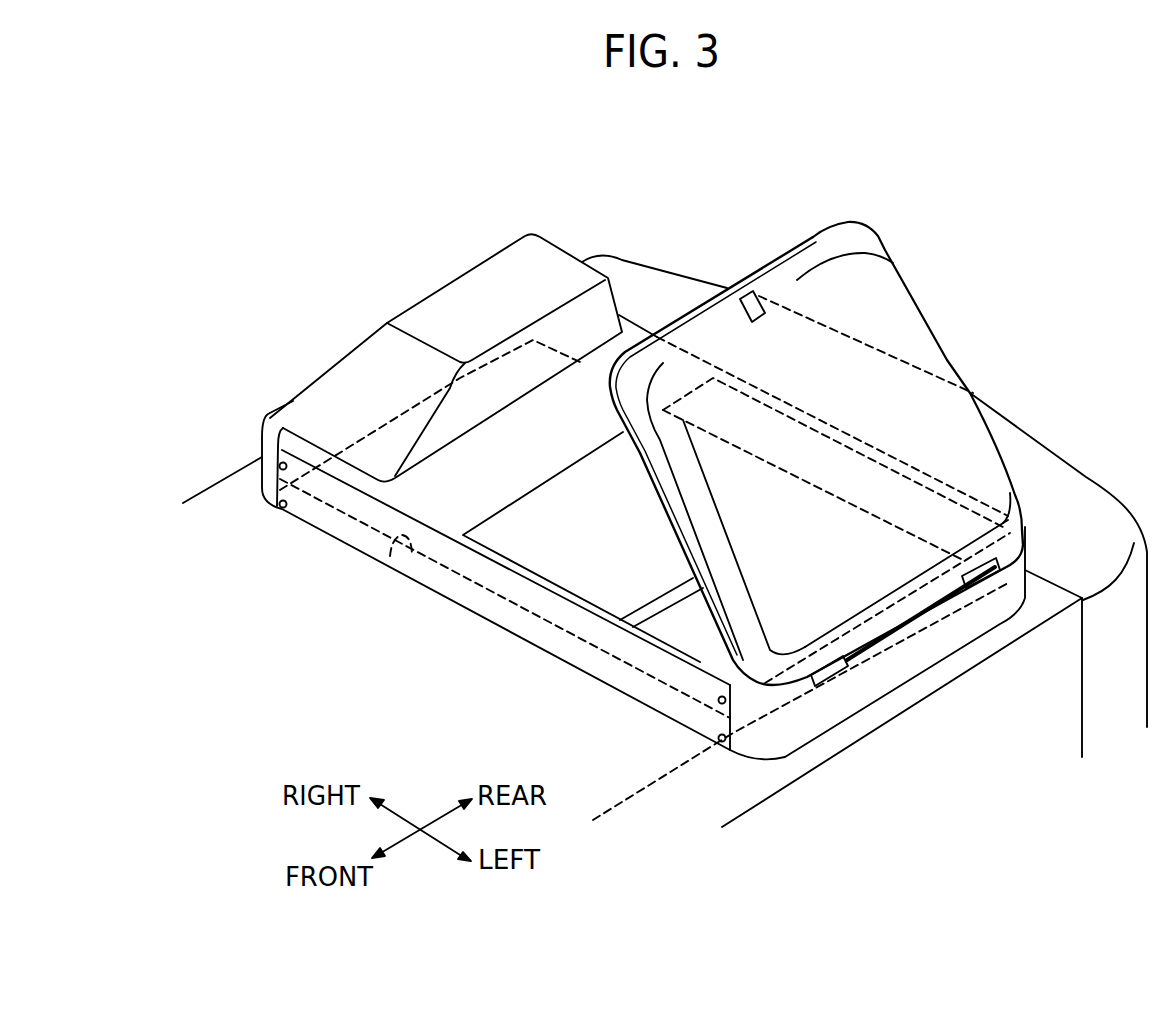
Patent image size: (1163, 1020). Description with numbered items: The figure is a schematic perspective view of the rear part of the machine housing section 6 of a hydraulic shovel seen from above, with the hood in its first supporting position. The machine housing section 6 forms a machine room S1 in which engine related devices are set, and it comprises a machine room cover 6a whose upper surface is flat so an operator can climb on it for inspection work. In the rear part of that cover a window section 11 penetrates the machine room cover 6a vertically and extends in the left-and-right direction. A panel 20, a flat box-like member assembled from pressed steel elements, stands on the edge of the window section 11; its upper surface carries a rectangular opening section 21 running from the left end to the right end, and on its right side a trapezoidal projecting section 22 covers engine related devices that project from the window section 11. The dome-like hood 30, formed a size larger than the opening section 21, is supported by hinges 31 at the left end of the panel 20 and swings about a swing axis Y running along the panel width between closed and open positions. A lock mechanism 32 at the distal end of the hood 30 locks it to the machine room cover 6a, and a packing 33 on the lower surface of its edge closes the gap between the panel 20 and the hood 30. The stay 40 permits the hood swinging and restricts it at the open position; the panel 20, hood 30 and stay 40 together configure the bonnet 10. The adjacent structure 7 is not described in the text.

The machine housing section 6 is at (895, 736).
The machine room cover 6a is at (233, 490).
The wall 7 is at (1073, 493).
The bonnet 10 is at (641, 331).
The window section 11 is at (395, 538).
The panel 20 is at (623, 680).
The opening section 21 is at (543, 573).
The projecting section 22 is at (453, 298).
The hood 30 is at (903, 297).
The hinges 31 is at (837, 686).
The lock mechanism 32 is at (760, 321).
The packing 33 is at (663, 410).
The stay 40 is at (653, 603).
The machine room S1 is at (561, 512).
The swing axis Y is at (628, 803).